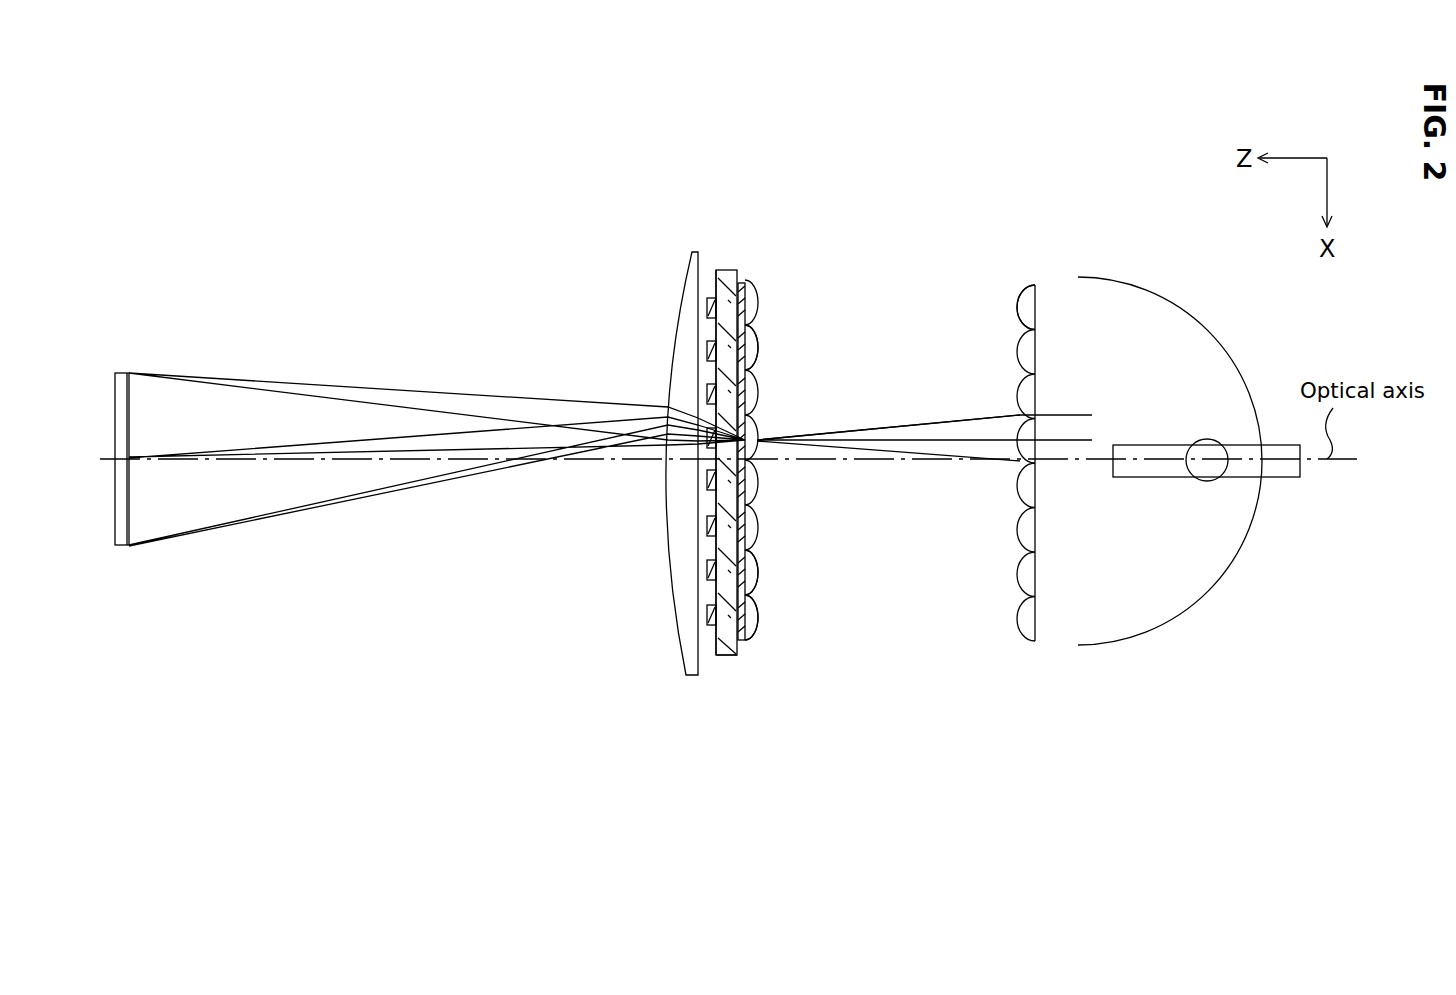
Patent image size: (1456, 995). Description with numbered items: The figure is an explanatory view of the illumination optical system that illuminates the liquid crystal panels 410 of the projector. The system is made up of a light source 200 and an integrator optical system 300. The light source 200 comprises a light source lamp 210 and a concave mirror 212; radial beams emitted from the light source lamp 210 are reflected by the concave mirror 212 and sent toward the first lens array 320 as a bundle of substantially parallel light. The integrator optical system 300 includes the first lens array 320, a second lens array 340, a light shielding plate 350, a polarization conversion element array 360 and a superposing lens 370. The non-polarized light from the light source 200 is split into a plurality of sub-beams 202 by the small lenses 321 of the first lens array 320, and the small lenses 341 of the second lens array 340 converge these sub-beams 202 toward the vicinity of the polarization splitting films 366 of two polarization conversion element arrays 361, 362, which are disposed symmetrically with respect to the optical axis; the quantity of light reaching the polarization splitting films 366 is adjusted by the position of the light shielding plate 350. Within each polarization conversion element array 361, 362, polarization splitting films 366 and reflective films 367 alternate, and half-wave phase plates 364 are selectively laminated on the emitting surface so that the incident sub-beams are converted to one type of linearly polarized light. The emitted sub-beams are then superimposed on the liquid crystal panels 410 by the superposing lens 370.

The light source 200 is at (1191, 267).
The sub-beams 202 is at (920, 424).
The light source lamp 210 is at (1212, 480).
The concave mirror 212 is at (1187, 335).
The integrator optical system 300 is at (895, 150).
The first lens array 320 is at (1035, 285).
The small lens 321 is at (1017, 308).
The second lens array 340 is at (757, 292).
The small lens 341 is at (760, 345).
The light shielding plate 350 is at (745, 285).
The polarization conversion element array 360 is at (731, 258).
The polarization conversion element array 361 is at (703, 298).
The polarization conversion element array 362 is at (730, 655).
The λ/2 phase plate 364 is at (706, 355).
The polarization splitting film 366 is at (757, 565).
The reflective film 367 is at (757, 608).
The superposing lens 370 is at (678, 315).
The liquid crystal panel 410 is at (125, 546).